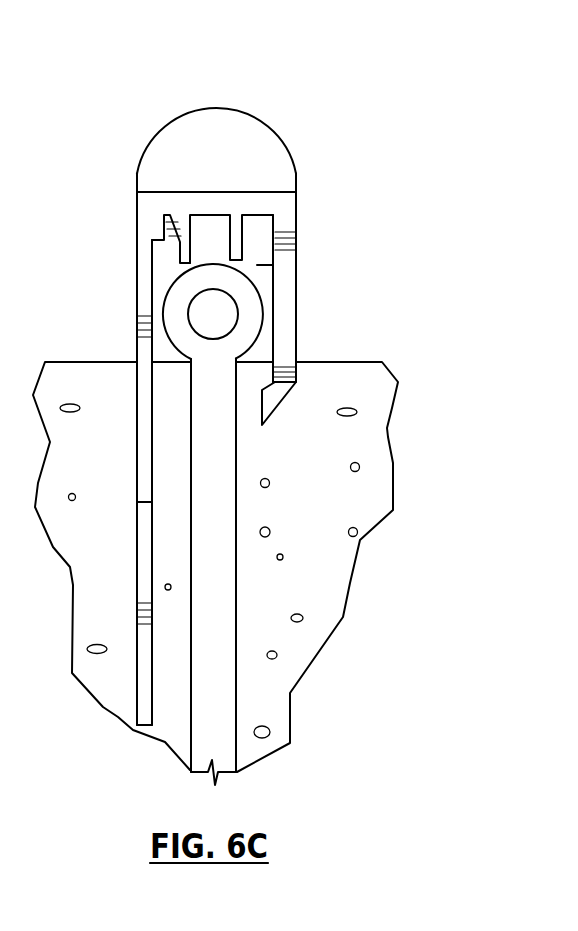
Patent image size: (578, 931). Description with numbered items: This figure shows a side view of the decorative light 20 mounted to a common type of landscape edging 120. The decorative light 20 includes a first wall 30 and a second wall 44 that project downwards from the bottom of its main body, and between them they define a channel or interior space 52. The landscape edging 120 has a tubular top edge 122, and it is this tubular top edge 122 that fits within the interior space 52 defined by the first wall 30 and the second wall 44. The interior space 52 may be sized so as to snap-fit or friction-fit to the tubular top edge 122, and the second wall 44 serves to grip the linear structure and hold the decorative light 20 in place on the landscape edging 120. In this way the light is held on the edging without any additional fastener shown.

The decorative light 20 is at (288, 105).
The first wall 30 is at (143, 305).
The second wall 44 is at (287, 300).
The interior space 52 is at (283, 265).
The landscape edging 120 is at (220, 678).
The tubular top edge 122 is at (245, 343).